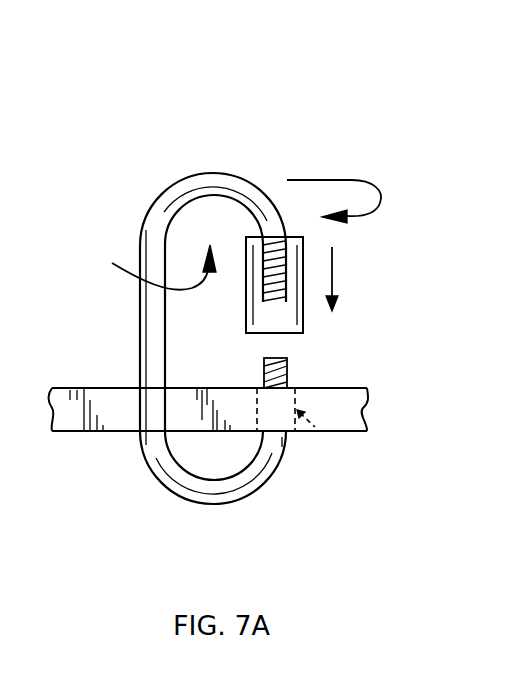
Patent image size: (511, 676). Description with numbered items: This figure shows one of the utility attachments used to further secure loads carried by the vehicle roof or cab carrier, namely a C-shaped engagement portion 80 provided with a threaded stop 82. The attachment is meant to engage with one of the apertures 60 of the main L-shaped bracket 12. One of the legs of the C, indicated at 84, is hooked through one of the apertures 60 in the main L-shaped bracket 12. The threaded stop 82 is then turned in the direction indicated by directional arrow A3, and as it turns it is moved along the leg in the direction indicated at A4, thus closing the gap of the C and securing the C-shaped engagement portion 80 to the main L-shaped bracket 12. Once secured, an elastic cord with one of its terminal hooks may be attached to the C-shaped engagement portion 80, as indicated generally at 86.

The C-shaped engagement portion 80 is at (166, 182).
The threaded stop 82 is at (266, 302).
The leg of the C 84 is at (288, 362).
The main L-shaped bracket 12 is at (352, 408).
The aperture 60 is at (313, 430).
The elastic cord attachment location 86 is at (147, 267).
The directional arrow A3 is at (335, 180).
The directional arrow A4 is at (332, 270).